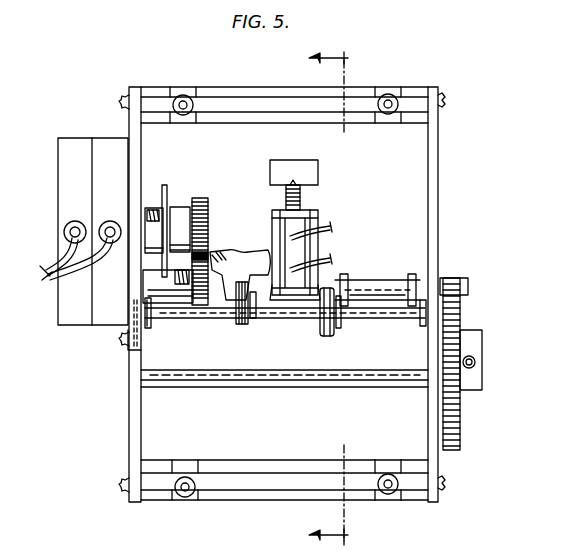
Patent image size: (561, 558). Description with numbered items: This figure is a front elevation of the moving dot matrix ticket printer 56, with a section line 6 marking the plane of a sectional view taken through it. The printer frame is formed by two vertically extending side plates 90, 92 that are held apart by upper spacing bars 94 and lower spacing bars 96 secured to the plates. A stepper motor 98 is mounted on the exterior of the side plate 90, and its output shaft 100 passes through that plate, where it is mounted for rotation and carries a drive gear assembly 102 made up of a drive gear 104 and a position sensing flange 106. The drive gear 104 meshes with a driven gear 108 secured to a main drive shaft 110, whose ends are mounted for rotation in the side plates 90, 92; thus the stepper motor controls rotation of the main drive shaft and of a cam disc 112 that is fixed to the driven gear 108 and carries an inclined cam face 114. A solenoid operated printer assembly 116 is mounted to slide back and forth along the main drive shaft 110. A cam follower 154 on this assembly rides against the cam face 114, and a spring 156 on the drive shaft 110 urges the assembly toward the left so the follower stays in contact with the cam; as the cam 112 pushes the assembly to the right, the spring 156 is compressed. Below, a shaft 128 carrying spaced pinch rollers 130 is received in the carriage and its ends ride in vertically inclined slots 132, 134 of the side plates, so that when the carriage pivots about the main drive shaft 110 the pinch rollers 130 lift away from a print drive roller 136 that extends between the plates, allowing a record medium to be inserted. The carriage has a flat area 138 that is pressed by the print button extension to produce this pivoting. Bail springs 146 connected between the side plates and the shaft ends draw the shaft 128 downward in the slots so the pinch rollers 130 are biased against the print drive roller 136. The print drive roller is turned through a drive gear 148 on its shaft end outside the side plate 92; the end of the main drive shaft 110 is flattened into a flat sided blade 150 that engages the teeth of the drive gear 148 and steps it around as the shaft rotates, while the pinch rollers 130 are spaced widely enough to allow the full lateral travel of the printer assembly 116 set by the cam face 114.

The section line 6- 6 is at (328, 294).
The moving dot matrix ticket printer 56 is at (82, 458).
The side plate 90 is at (135, 300).
The side plate 92 is at (438, 155).
The upper spacing bars 94 is at (406, 88).
The lower spacing bars 96 is at (392, 496).
The stepper motor 98 is at (58, 168).
The output shaft 100 is at (145, 208).
The drive gear assembly 102 is at (180, 207).
The drive gear 104 is at (203, 198).
The position sensing flange 106 is at (172, 190).
The driven gear 108 is at (200, 318).
The main drive shaft 110 is at (128, 335).
The cam disc 112 is at (236, 226).
The inclined cam face 114 is at (262, 258).
The solenoid operated printer assembly 116 is at (320, 202).
The shaft 128 is at (198, 318).
The pinch rollers 130 is at (272, 335).
The vertically inclined slot 132 is at (130, 358).
The vertically inclined slot 134 is at (468, 292).
The print drive roller 136 is at (254, 386).
The flat area 138 is at (318, 175).
The bail springs 146 is at (148, 320).
The drive gear 148 is at (460, 422).
The flat sided blade 150 is at (458, 278).
The cam follower 154 is at (248, 250).
The spring 156 is at (404, 278).